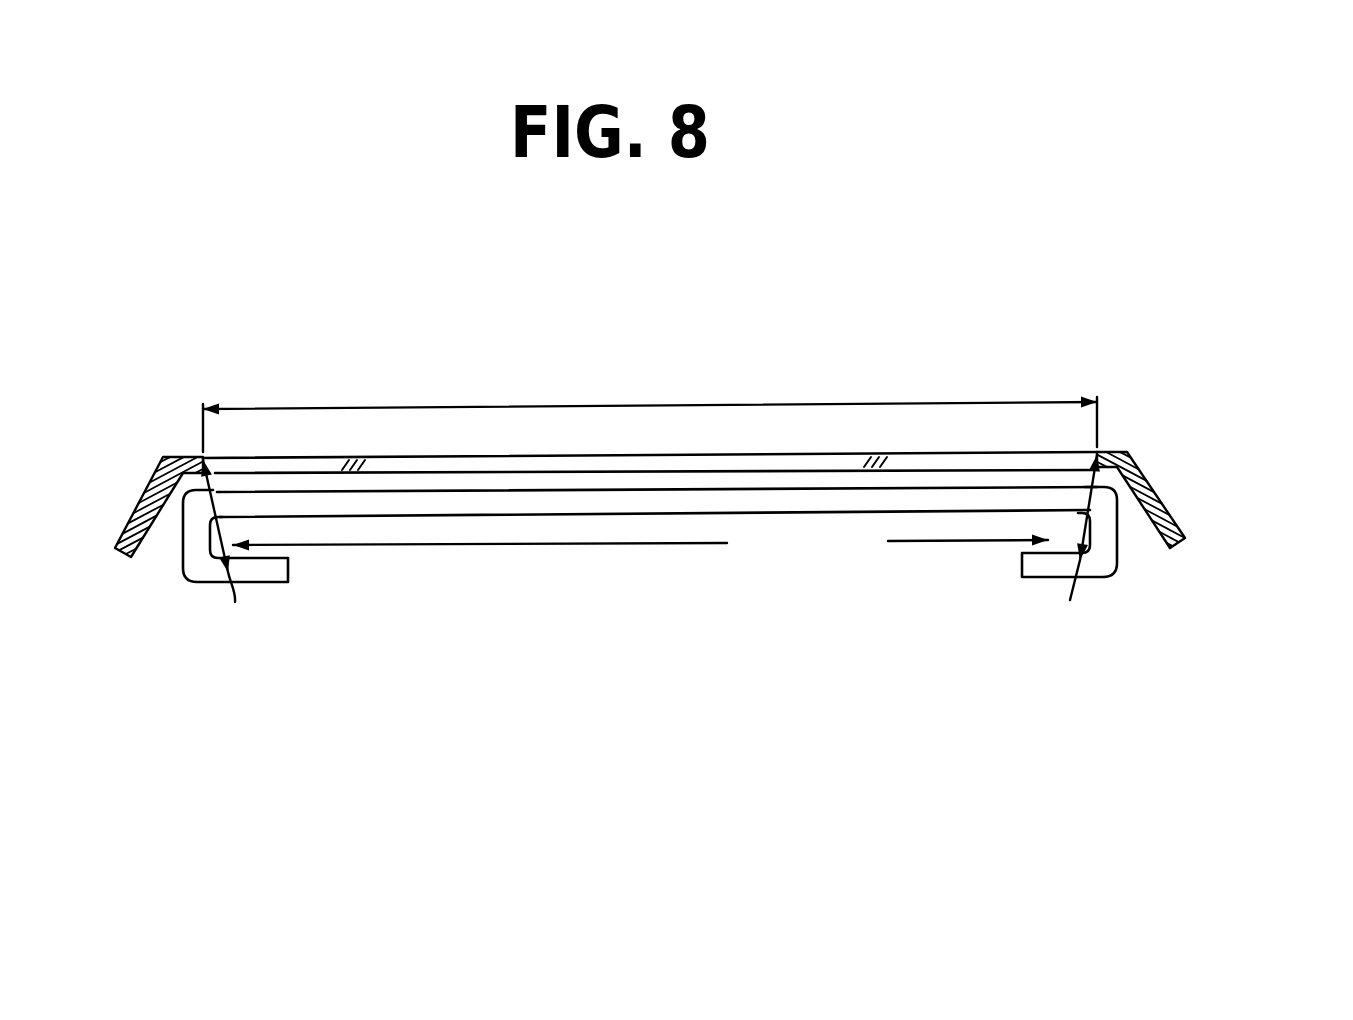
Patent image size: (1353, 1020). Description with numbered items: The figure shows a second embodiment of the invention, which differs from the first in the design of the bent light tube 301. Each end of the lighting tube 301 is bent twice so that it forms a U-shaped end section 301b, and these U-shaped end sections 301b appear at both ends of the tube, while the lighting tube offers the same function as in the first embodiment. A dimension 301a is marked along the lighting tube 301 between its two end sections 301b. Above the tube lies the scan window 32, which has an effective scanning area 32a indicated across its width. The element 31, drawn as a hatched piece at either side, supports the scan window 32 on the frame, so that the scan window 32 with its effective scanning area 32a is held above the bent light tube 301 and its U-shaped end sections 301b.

The element 31 is at (1157, 488).
The scan window 32 is at (750, 468).
The effective scanning area 32a is at (650, 396).
The bent light tube 301 is at (577, 502).
The frame inner width 301a is at (640, 566).
The U-shaped end section 301b is at (195, 547).